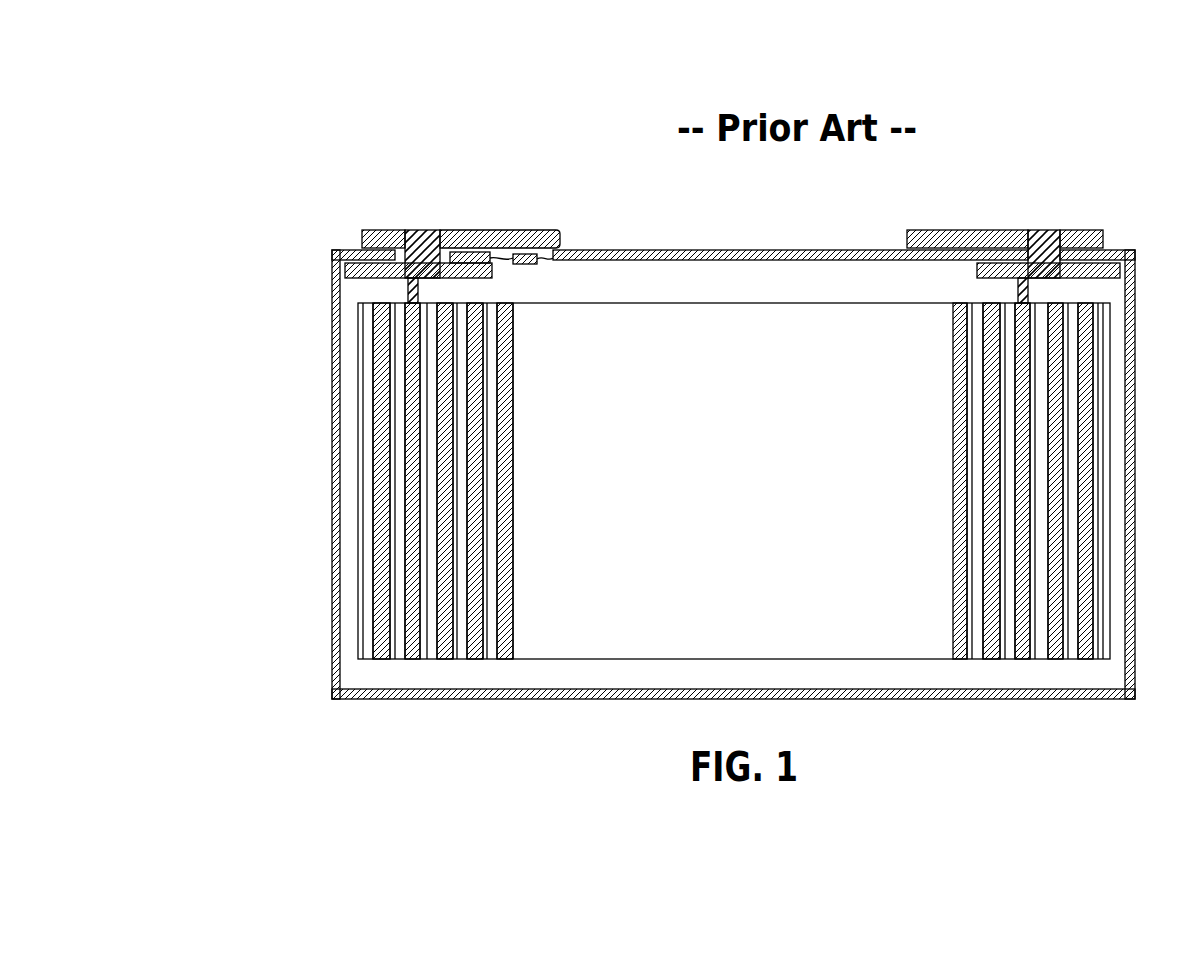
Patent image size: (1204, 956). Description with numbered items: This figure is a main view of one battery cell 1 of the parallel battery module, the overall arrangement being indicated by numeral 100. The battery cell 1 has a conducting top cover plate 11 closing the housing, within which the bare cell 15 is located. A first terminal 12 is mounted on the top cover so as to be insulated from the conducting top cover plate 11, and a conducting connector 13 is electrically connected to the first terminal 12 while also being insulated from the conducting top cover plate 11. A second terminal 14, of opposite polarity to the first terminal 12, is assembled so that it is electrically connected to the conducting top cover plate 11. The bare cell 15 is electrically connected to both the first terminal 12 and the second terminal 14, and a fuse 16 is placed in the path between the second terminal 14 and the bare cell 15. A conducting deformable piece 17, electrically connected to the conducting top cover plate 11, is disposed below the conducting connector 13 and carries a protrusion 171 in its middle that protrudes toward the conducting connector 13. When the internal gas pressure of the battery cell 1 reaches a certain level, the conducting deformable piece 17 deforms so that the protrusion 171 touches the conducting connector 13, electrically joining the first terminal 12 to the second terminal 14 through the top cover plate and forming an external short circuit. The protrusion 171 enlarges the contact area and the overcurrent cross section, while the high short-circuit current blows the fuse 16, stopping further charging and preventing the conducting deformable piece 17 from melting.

The secondary battery (prior art) 100 is at (260, 142).
The battery cell 1 is at (332, 183).
The conducting top cover plate 11 is at (695, 250).
The first terminal 12 is at (410, 229).
The conducting connector 13 is at (470, 230).
The second terminal 14 is at (1036, 229).
The bare cell 15 is at (1100, 500).
The fuse 16 is at (1018, 293).
The conducting deformable piece 17 is at (530, 263).
The protrusion 171 is at (527, 254).